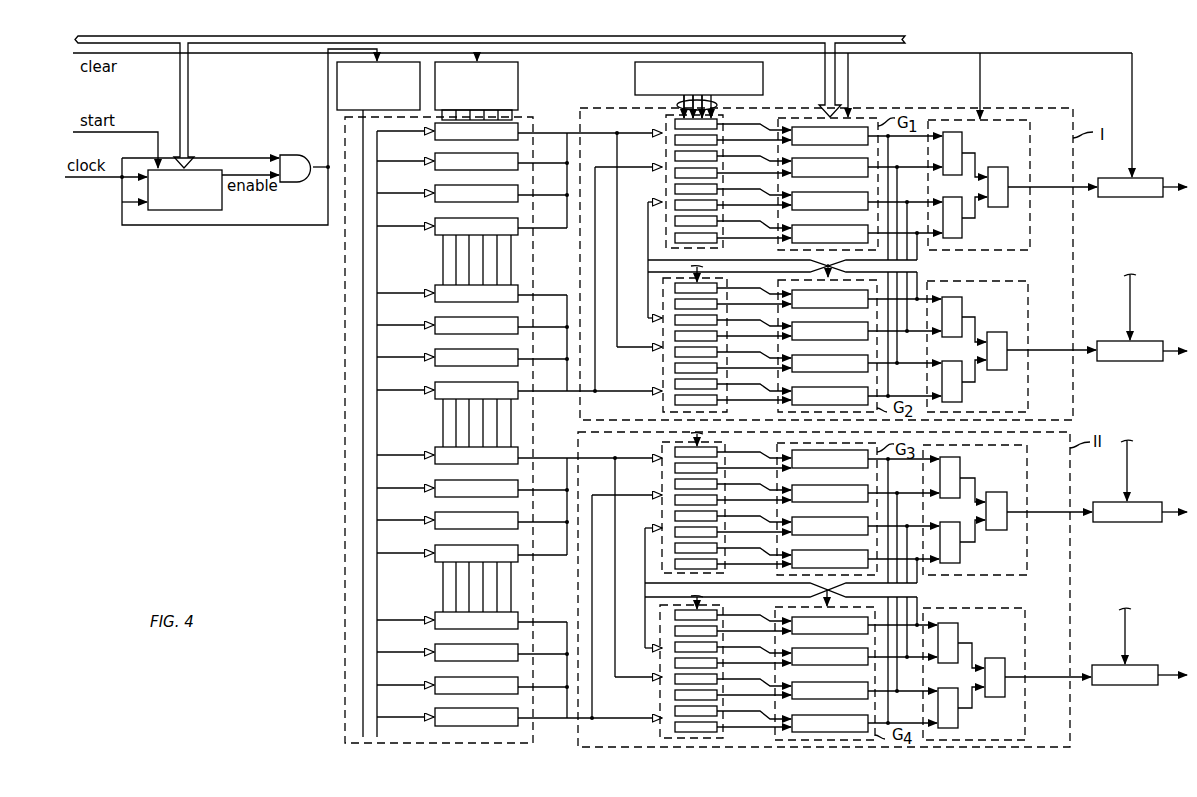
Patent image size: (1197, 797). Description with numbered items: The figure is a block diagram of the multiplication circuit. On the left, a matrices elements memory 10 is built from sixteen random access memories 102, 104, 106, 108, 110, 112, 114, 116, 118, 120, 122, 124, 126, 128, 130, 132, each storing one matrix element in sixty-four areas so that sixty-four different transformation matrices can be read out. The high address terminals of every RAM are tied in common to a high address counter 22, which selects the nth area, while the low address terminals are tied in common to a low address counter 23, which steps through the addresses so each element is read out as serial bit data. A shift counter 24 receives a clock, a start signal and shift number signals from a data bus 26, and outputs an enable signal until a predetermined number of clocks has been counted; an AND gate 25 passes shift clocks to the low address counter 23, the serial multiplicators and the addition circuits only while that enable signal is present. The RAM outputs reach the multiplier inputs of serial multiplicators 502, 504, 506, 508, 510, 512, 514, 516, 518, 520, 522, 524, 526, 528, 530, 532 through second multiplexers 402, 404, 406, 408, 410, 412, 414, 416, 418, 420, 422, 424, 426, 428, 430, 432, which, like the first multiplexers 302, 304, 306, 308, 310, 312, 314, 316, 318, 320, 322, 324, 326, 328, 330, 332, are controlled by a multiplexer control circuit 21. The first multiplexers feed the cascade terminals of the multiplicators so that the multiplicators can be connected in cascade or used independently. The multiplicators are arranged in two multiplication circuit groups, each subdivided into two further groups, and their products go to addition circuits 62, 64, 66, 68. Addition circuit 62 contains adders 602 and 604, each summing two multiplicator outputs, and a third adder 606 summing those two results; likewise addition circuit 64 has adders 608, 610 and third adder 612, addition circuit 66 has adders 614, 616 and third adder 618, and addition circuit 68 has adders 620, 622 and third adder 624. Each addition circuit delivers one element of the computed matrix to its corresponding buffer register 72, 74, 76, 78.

The matrices elements memory 10 is at (533, 117).
The multiplexer control circuit 21 is at (763, 78).
The high address counter 22 is at (337, 78).
The low address counter 23 is at (518, 78).
The shift counter 24 is at (222, 205).
The AND gate 25 is at (302, 154).
The data bus 26 is at (683, 36).
The addition circuit 62 is at (1012, 187).
The addition circuit 64 is at (1011, 346).
The addition circuit 66 is at (1007, 510).
The addition circuit 68 is at (1007, 674).
The buffer register 72 is at (1145, 177).
The buffer register 74 is at (1145, 340).
The buffer register 76 is at (1142, 501).
The buffer register 78 is at (1140, 664).
The random access memory 102 is at (518, 140).
The random access memory 104 is at (518, 170).
The random access memory 106 is at (518, 202).
The random access memory 108 is at (518, 235).
The random access memory 110 is at (518, 302).
The random access memory 112 is at (518, 334).
The random access memory 114 is at (518, 366).
The random access memory 116 is at (518, 399).
The random access memory 118 is at (518, 464).
The random access memory 120 is at (518, 497).
The random access memory 122 is at (518, 529).
The random access memory 124 is at (518, 562).
The random access memory 126 is at (518, 629).
The random access memory 128 is at (518, 661).
The random access memory 130 is at (518, 694).
The random access memory 132 is at (518, 726).
The first multiplexer 302 is at (718, 127).
The first multiplexer 304 is at (718, 159).
The first multiplexer 306 is at (718, 192).
The first multiplexer 308 is at (718, 224).
The first multiplexer 310 is at (718, 291).
The first multiplexer 312 is at (718, 323).
The first multiplexer 314 is at (718, 355).
The first multiplexer 316 is at (718, 387).
The first multiplexer 318 is at (718, 455).
The first multiplexer 320 is at (718, 487).
The first multiplexer 322 is at (718, 519).
The first multiplexer 324 is at (718, 551).
The first multiplexer 326 is at (718, 618).
The first multiplexer 328 is at (718, 650).
The first multiplexer 330 is at (718, 682).
The first multiplexer 332 is at (718, 714).
The second multiplexer 402 is at (718, 143).
The second multiplexer 404 is at (718, 176).
The second multiplexer 406 is at (718, 208).
The second multiplexer 408 is at (718, 241).
The second multiplexer 410 is at (718, 307).
The second multiplexer 412 is at (718, 339).
The second multiplexer 414 is at (718, 371).
The second multiplexer 416 is at (718, 403).
The second multiplexer 418 is at (718, 471).
The second multiplexer 420 is at (718, 503).
The second multiplexer 422 is at (718, 535).
The second multiplexer 424 is at (718, 567).
The second multiplexer 426 is at (718, 634).
The second multiplexer 428 is at (718, 666).
The second multiplexer 430 is at (718, 698).
The second multiplexer 432 is at (718, 730).
The serial multiplicator 502 is at (815, 145).
The serial multiplicator 504 is at (815, 177).
The serial multiplicator 506 is at (815, 210).
The serial multiplicator 508 is at (815, 243).
The serial multiplicator 510 is at (815, 308).
The serial multiplicator 512 is at (815, 340).
The serial multiplicator 514 is at (815, 372).
The serial multiplicator 516 is at (815, 405).
The serial multiplicator 518 is at (815, 468).
The serial multiplicator 520 is at (815, 502).
The serial multiplicator 522 is at (815, 535).
The serial multiplicator 524 is at (815, 568).
The serial multiplicator 526 is at (815, 634).
The serial multiplicator 528 is at (815, 665).
The serial multiplicator 530 is at (815, 699).
The serial multiplicator 532 is at (815, 732).
The adder 602 is at (962, 137).
The adder 604 is at (962, 232).
The third adder 606 is at (996, 167).
The adder 608 is at (962, 302).
The adder 610 is at (962, 395).
The third adder 612 is at (995, 332).
The adder 614 is at (960, 462).
The adder 616 is at (960, 556).
The third adder 618 is at (994, 492).
The adder 620 is at (958, 628).
The adder 622 is at (958, 721).
The third adder 624 is at (993, 658).